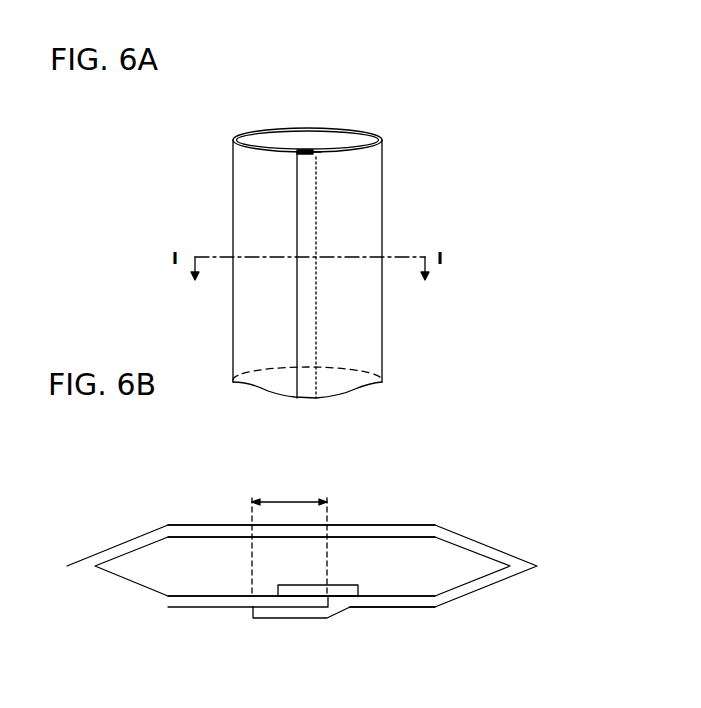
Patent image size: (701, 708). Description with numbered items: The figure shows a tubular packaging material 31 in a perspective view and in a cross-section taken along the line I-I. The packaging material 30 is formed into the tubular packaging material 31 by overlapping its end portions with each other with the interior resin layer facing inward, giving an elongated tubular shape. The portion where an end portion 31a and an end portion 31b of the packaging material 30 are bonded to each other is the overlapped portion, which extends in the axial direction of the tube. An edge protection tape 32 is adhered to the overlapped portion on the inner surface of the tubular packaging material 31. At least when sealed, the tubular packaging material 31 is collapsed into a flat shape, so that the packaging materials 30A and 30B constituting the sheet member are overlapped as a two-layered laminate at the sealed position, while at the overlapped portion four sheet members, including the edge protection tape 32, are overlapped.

In FIG. 6A, the packaging material 30 is at (370, 200).
In FIG. 6B, the packaging material 30 is at (493, 547).
In FIG. 6B, the packaging material 30A is at (395, 524).
In FIG. 6B, the packaging material 30B is at (395, 607).
In FIG. 6A, the tubular packaging material 31 is at (363, 108).
In FIG. 6B, the tubular packaging material 31 is at (482, 523).
In FIG. 6A, the end portion 31a is at (298, 152).
In FIG. 6B, the end portion 31a is at (260, 603).
In FIG. 6A, the end portion 31b is at (307, 163).
In FIG. 6B, the end portion 31b is at (290, 613).
In FIG. 6B, the edge protection tape 32 is at (337, 585).